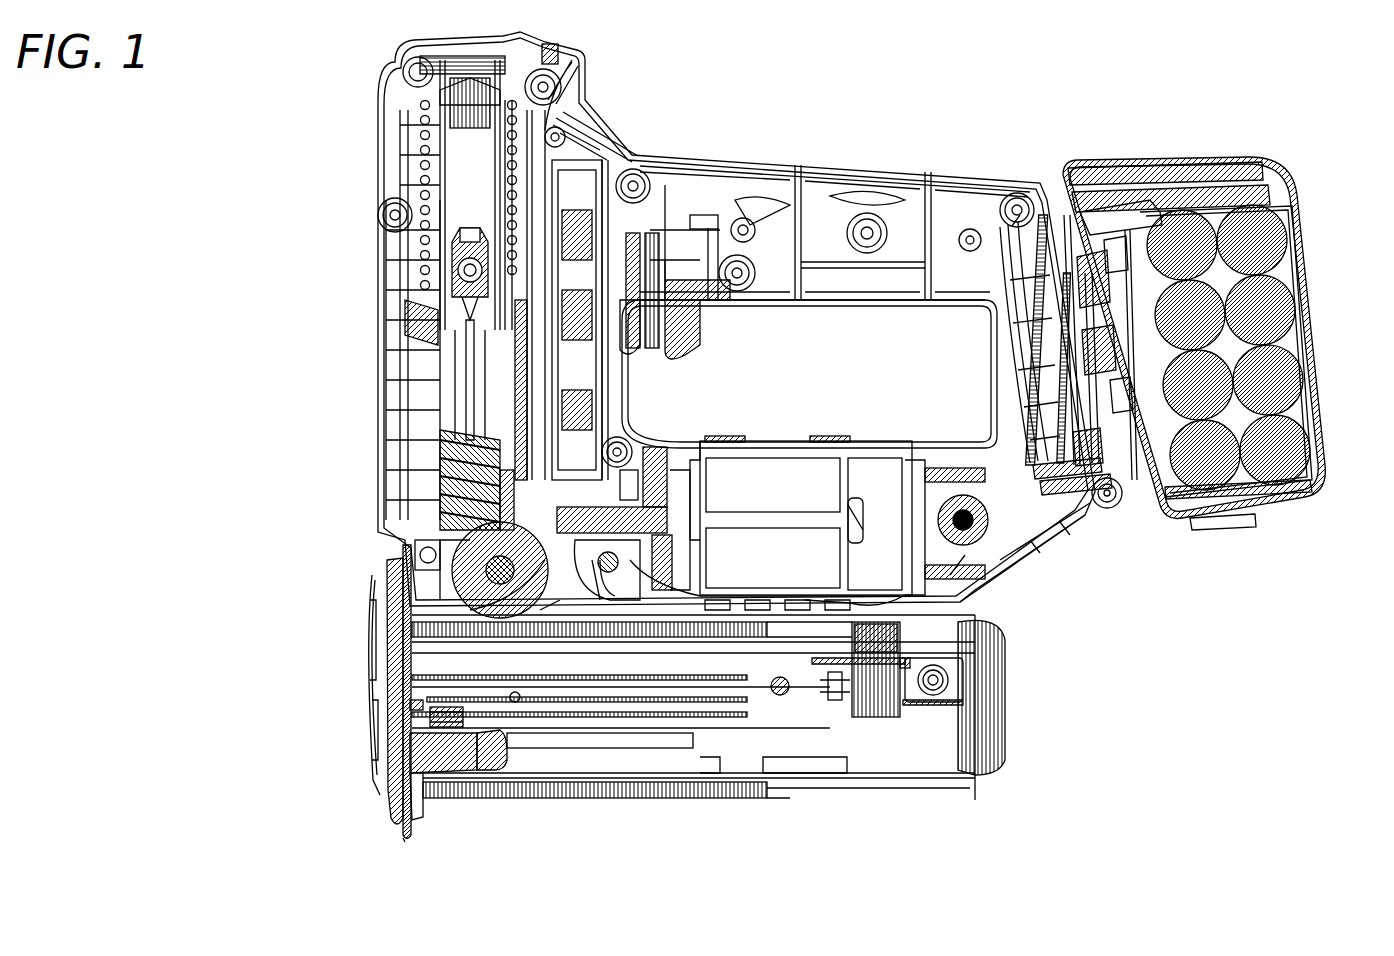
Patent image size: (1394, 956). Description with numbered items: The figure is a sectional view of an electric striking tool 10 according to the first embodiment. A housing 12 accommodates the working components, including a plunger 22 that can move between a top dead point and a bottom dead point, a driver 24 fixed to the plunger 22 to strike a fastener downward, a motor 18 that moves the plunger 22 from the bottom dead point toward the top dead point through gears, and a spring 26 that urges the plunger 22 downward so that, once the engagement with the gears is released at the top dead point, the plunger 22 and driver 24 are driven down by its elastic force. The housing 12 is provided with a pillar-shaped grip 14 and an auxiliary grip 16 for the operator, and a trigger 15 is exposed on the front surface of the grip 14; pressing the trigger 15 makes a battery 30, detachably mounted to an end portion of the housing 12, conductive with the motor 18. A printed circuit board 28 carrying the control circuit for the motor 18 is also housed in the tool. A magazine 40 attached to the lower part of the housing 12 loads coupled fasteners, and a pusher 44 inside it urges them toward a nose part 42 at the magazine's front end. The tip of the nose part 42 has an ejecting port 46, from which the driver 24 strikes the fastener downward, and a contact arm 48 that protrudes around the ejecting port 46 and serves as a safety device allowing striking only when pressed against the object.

The striking tool 10 is at (1197, 690).
The housing 12 is at (383, 190).
The grip 14 is at (818, 300).
The trigger 15 is at (710, 338).
The auxiliary grip 16 is at (805, 444).
The motor 18 is at (742, 462).
The plunger 22 is at (386, 296).
The driver 24 is at (382, 366).
The spring 26 is at (402, 140).
The printed circuit board 28 is at (1068, 183).
The battery 30 is at (1310, 490).
The magazine 40 is at (768, 800).
The nose part 42 is at (385, 795).
The pusher 44 is at (540, 735).
The ejecting port 46 is at (403, 838).
The contact arm 48 is at (395, 830).